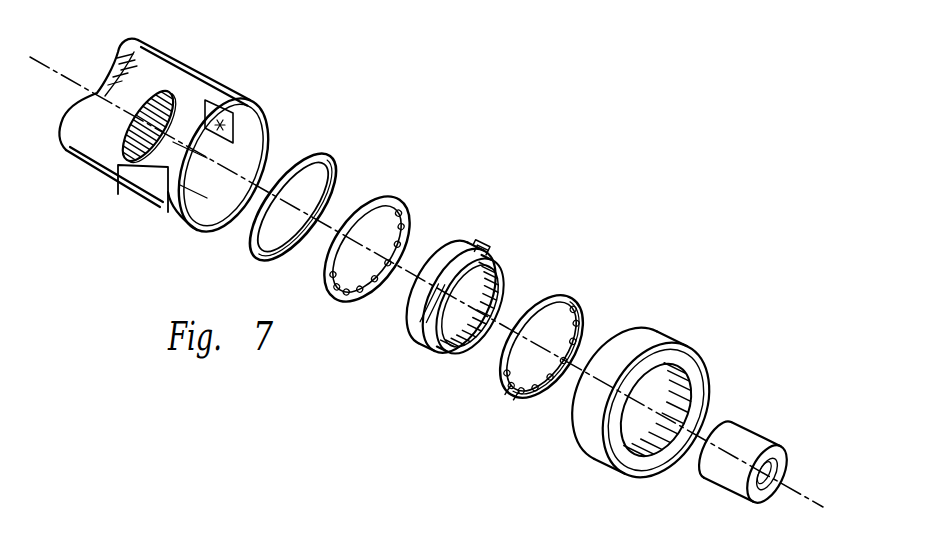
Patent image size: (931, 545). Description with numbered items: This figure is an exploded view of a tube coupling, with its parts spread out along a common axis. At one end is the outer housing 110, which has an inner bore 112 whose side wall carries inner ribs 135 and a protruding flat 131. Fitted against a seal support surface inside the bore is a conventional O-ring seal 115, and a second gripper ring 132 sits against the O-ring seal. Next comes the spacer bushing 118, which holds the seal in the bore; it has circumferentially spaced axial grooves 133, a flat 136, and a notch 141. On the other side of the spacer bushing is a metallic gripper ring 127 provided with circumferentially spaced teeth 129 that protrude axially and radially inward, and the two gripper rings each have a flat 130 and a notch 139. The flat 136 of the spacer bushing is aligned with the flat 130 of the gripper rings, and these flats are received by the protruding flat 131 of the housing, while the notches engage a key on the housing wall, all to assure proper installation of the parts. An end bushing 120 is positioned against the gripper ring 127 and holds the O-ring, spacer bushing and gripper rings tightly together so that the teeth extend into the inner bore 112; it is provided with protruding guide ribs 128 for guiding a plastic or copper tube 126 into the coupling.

The outer housing 110 is at (197, 73).
The inner bore 112 is at (262, 151).
The protruding flat 131 is at (246, 125).
The inner ribs 135 is at (126, 175).
The O-ring seal 115 is at (323, 153).
The second gripper ring 132 is at (397, 198).
The spacer bushing 118 is at (480, 258).
The notch 141 is at (461, 244).
The flat 136 is at (512, 280).
The axial grooves 133 is at (508, 282).
The gripper ring 127 is at (565, 295).
The notch 139 is at (586, 298).
The flat 130 is at (588, 322).
The teeth 129 is at (514, 402).
The end bushing 120 is at (652, 333).
The guide ribs 128 is at (690, 392).
The tube 126 is at (758, 431).